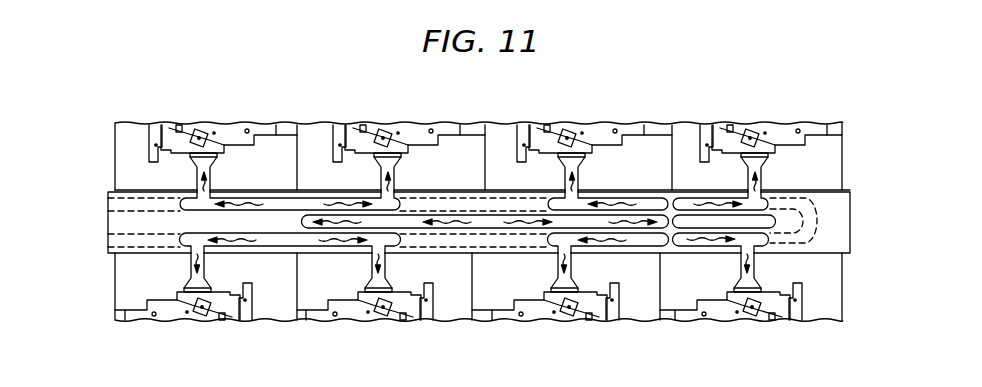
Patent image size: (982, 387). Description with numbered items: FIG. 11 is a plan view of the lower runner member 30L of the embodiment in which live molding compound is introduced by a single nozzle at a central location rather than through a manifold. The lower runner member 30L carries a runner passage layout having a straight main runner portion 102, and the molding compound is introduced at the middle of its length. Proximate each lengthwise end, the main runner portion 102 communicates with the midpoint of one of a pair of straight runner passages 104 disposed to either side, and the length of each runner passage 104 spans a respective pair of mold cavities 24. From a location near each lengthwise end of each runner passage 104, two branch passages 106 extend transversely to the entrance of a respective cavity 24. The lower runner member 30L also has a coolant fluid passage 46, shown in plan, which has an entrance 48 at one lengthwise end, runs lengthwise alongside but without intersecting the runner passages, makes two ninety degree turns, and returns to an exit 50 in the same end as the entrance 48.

The mold cavity 24 is at (226, 130).
The lower runner member 30L is at (108, 192).
The fluid passage 46 is at (818, 218).
The entrance 48 is at (108, 242).
The exit 50 is at (108, 204).
The main runner portion 102 is at (490, 220).
The runner passage 104 is at (293, 208).
The branch passage 106 is at (178, 194).